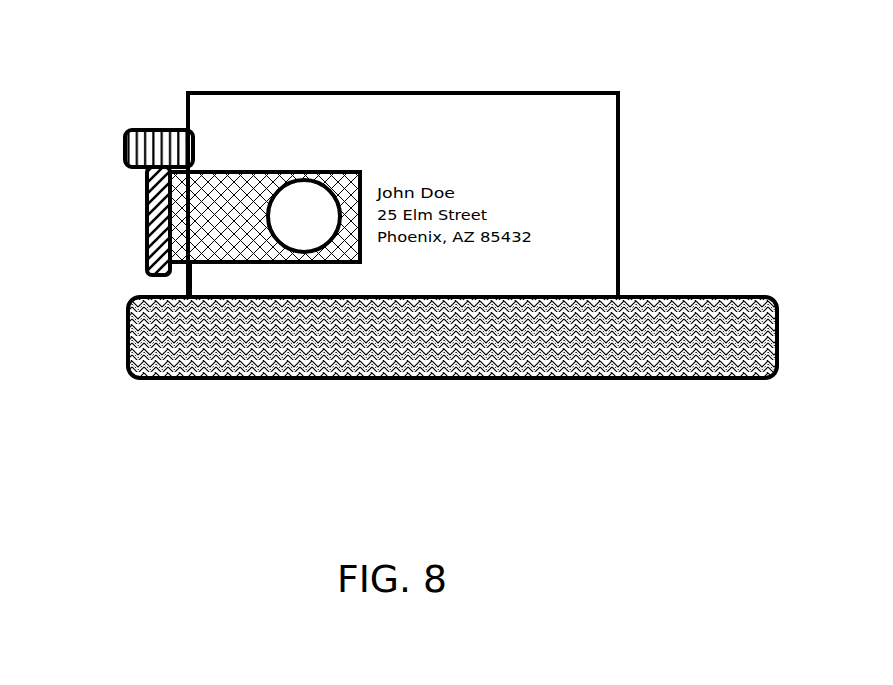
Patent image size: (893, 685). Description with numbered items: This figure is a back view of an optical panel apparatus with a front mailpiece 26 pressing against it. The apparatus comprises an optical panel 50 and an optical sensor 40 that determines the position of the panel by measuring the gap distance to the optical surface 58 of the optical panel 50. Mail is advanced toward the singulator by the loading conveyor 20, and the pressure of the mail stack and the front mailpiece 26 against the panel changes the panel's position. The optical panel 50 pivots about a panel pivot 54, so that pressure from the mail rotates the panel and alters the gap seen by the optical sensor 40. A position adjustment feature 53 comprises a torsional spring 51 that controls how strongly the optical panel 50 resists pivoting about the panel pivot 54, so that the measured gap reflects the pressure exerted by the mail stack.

The loading conveyor 20 is at (250, 358).
The front mailpiece 26 is at (290, 108).
The optical sensor 40 is at (316, 232).
The optical panel 50 is at (249, 193).
The torsional spring 51 is at (119, 160).
The position adjustment feature 53 is at (153, 155).
The panel pivot 54 is at (147, 193).
The optical surface 58 is at (213, 243).